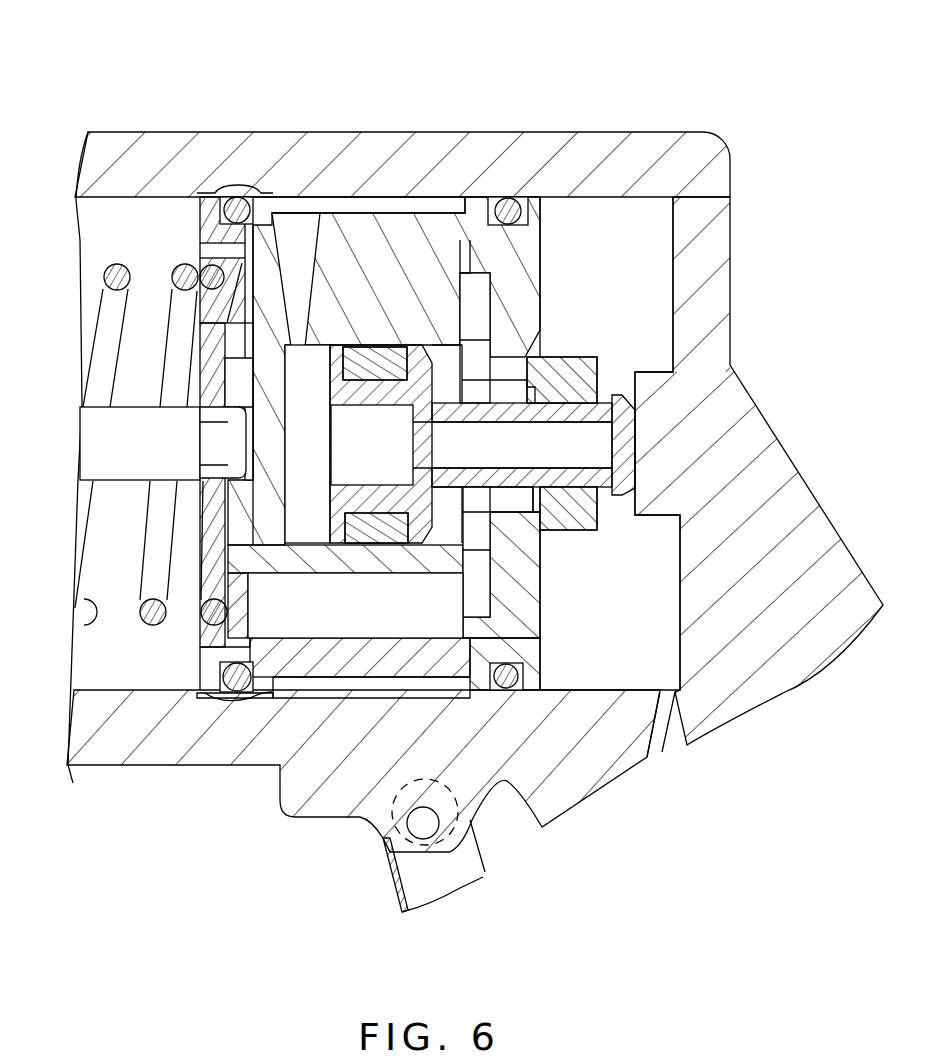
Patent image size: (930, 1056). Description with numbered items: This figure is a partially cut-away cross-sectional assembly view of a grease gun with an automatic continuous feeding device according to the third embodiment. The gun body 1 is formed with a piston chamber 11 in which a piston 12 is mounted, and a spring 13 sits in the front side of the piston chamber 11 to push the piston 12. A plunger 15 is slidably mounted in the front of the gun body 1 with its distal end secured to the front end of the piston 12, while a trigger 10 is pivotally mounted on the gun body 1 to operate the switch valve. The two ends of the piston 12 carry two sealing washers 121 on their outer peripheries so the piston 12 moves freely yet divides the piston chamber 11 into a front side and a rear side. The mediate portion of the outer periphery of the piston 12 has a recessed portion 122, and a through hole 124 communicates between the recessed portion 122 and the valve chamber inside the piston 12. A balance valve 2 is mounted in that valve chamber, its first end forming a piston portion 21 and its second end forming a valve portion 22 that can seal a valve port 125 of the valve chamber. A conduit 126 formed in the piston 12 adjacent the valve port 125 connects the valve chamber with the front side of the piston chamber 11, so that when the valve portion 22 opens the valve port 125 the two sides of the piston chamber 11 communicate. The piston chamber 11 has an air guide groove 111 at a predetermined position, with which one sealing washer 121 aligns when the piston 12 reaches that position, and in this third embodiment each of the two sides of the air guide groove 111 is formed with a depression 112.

The gun body 1 is at (450, 128).
The trigger 10 is at (387, 890).
The piston chamber 11 is at (610, 215).
The piston 12 is at (405, 212).
The air guide groove 111 is at (240, 196).
The depression 112 is at (211, 197).
The sealing washers 121 is at (510, 203).
The recessed portion 122 is at (364, 212).
The through hole 124 is at (295, 213).
The valve port 125 is at (507, 497).
The conduit 126 is at (270, 620).
The spring 13 is at (105, 265).
The plunger 15 is at (95, 437).
The balance valve 2 is at (548, 412).
The piston portion 21 is at (336, 527).
The valve portion 22 is at (583, 518).